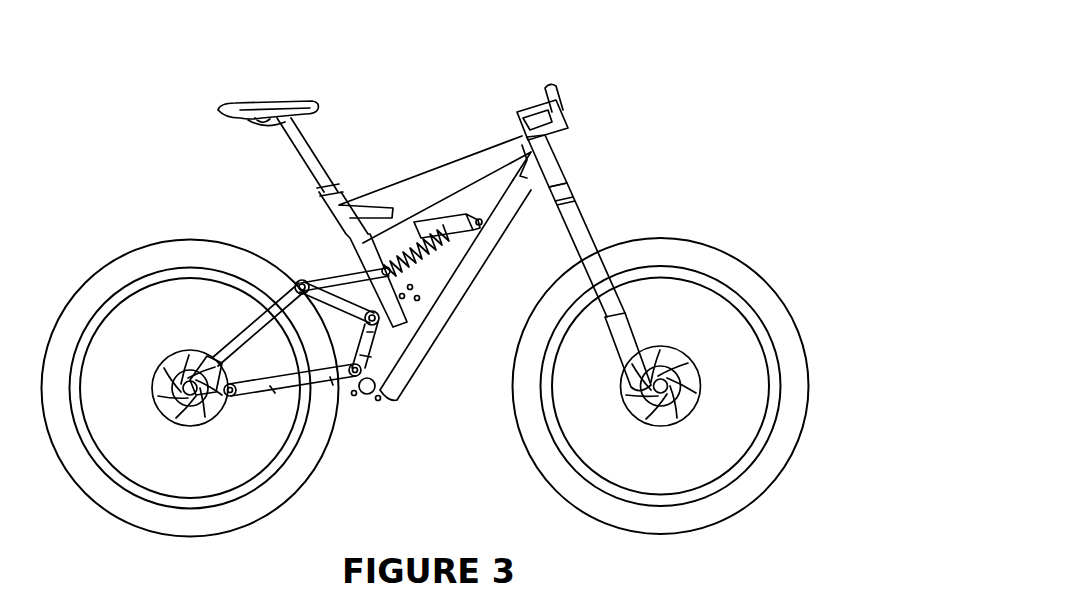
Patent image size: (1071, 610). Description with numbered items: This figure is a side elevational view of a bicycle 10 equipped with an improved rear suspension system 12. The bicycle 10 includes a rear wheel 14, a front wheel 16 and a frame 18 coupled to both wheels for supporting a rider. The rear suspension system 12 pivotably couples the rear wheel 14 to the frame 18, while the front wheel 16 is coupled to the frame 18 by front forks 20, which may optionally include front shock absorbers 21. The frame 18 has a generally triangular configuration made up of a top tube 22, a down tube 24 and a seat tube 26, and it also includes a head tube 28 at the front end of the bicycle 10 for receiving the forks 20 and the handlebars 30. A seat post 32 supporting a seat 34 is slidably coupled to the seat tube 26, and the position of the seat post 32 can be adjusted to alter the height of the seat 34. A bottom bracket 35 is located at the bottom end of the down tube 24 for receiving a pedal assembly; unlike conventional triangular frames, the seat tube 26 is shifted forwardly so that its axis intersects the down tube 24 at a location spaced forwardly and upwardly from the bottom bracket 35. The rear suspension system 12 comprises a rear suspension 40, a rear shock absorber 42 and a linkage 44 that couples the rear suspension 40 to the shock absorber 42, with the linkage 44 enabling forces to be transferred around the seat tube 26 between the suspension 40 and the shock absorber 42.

The bicycle 10 is at (645, 135).
The rear suspension system 12 is at (313, 250).
The rear wheel 14 is at (172, 424).
The front wheel 16 is at (693, 418).
The frame 18 is at (410, 160).
The front forks 20 is at (627, 207).
The front shock absorbers 21 is at (614, 291).
The top tube 22 is at (473, 178).
The down tube 24 is at (428, 310).
The seat tube 26 is at (330, 203).
The head tube 28 is at (553, 134).
The handlebars 30 is at (567, 100).
The seat post 32 is at (295, 148).
The seat 34 is at (257, 105).
The bottom bracket 35 is at (370, 393).
The rear suspension 40 is at (354, 401).
The rear shock absorber 42 is at (447, 247).
The linkage 44 is at (355, 265).